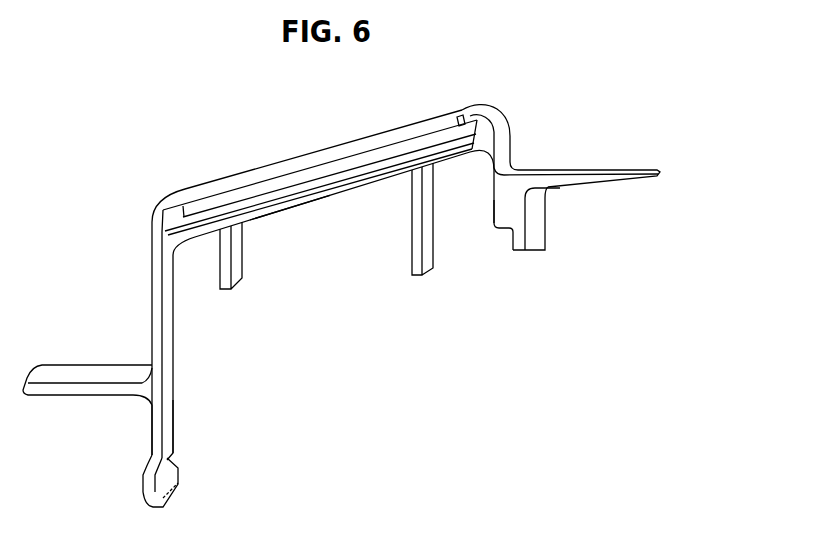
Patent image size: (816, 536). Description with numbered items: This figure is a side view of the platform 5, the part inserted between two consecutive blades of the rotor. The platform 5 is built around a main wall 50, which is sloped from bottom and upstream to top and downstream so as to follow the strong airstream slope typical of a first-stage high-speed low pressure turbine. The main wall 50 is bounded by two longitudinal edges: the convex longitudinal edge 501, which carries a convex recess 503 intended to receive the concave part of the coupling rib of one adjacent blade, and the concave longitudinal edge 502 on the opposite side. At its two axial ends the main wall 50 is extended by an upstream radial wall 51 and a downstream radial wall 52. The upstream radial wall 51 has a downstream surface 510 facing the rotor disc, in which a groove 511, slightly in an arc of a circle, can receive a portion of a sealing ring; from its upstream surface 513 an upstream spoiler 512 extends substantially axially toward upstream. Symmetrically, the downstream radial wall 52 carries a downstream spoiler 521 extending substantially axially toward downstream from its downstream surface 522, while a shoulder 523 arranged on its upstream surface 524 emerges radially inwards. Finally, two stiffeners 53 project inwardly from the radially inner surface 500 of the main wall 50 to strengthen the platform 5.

The platform 5 is at (131, 137).
The main wall 50 is at (321, 142).
The radially inner surface 500 is at (291, 216).
The convex longitudinal edge 501 is at (271, 190).
The concave longitudinal edge 502 is at (245, 164).
The convex recess 503 is at (223, 209).
The upstream radial wall 51 is at (144, 302).
The downstream surface 510 is at (182, 413).
The groove 511 is at (183, 467).
The upstream spoiler 512 is at (90, 376).
The upstream surface 513 is at (143, 428).
The downstream radial wall 52 is at (493, 170).
The downstream spoiler 521 is at (607, 191).
The downstream surface 522 is at (554, 223).
The shoulder 523 is at (500, 246).
The upstream surface 524 is at (486, 212).
The stiffener 53 is at (248, 256).